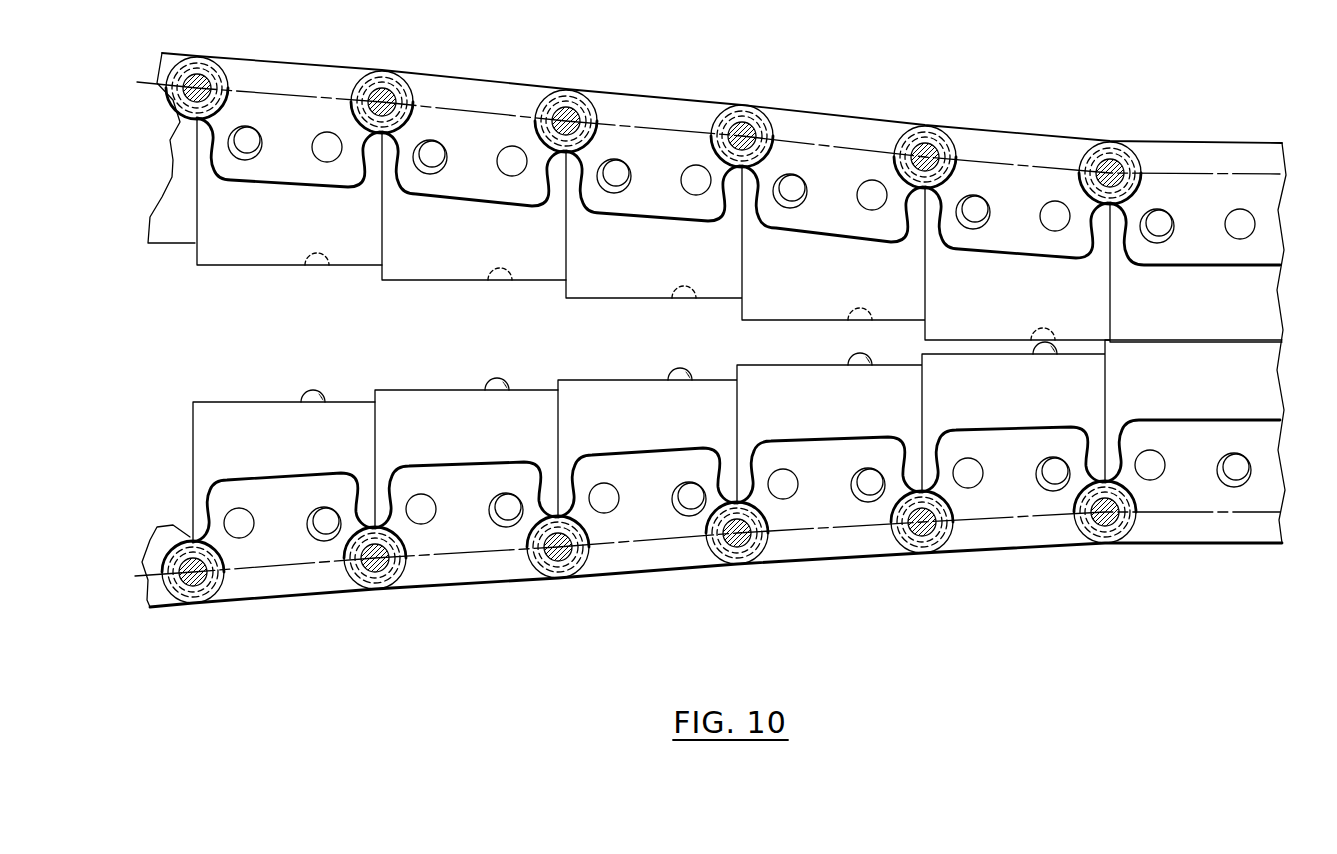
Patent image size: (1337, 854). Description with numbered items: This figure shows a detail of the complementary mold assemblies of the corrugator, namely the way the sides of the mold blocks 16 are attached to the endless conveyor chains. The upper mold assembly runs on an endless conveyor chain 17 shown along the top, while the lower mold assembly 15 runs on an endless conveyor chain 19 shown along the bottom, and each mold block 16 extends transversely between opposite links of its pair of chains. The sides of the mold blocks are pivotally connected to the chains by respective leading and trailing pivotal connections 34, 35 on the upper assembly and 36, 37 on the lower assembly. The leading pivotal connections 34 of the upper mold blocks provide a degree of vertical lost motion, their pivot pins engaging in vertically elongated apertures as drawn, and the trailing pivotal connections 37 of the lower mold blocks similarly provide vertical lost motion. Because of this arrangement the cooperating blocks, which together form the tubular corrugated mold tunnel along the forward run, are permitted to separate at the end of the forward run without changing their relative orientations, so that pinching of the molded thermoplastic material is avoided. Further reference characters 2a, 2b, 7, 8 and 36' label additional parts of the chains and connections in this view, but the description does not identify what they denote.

The endless conveyor chain 17 is at (688, 102).
The endless conveyor chain 19 is at (647, 573).
The lower mold assembly 15 is at (978, 197).
The upper link 2a is at (1037, 183).
The lower link 2b is at (978, 505).
The upper pivot pin 7 is at (1073, 283).
The lower pivot pin 8 is at (1032, 398).
The mold block 16 is at (430, 388).
The leading pivotal connection 34 is at (427, 168).
The trailing pivotal connection 35 is at (510, 170).
The leading pivotal connection 36 is at (414, 459).
The hole 36' is at (777, 438).
The trailing pivotal connection 37 is at (510, 503).